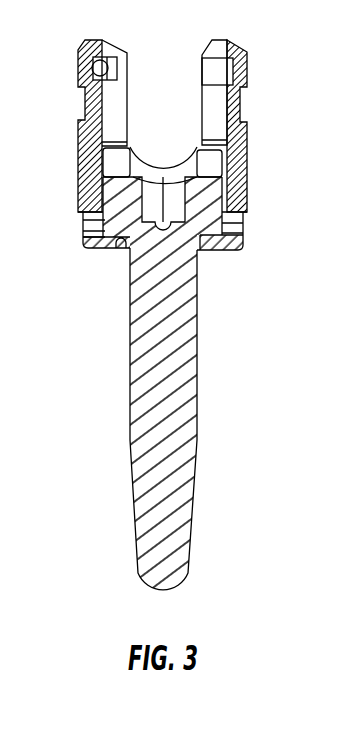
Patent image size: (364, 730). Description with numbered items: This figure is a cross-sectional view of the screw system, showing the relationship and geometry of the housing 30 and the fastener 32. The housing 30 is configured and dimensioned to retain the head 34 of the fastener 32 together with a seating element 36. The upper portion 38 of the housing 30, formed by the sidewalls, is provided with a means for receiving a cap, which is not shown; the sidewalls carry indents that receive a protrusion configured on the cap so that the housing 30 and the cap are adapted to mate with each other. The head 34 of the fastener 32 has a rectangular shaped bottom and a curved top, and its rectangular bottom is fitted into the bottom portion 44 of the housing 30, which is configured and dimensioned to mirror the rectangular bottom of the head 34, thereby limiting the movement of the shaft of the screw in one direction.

The housing 30 is at (248, 58).
The fastener 32 is at (197, 367).
The head 34 is at (115, 243).
The seating element 36 is at (182, 170).
The upper portion 38 is at (69, 39).
The bottom portion 44 is at (69, 127).